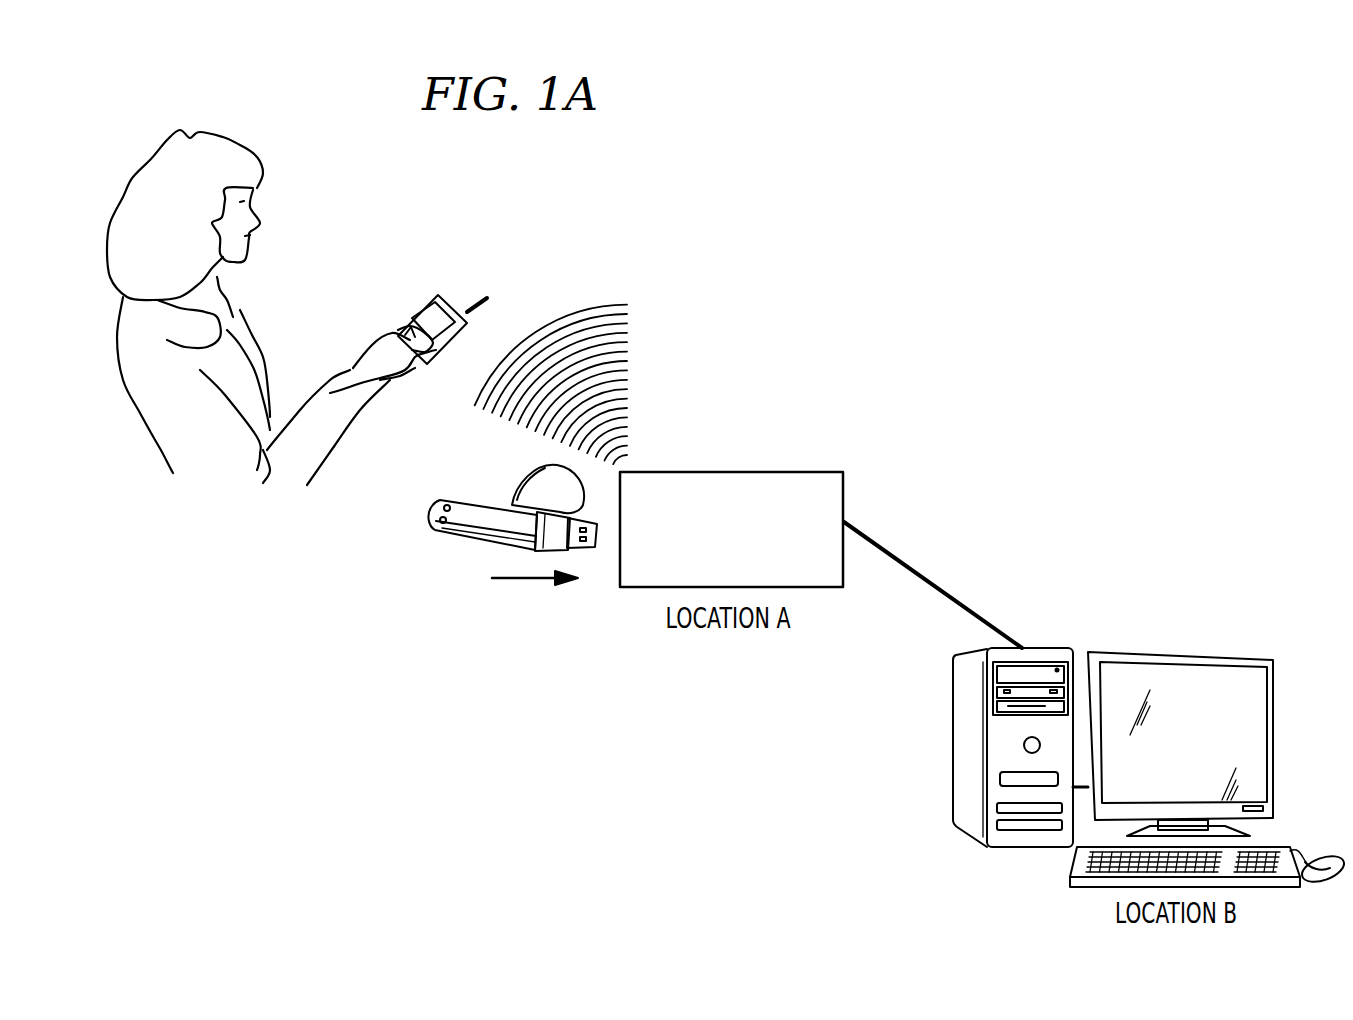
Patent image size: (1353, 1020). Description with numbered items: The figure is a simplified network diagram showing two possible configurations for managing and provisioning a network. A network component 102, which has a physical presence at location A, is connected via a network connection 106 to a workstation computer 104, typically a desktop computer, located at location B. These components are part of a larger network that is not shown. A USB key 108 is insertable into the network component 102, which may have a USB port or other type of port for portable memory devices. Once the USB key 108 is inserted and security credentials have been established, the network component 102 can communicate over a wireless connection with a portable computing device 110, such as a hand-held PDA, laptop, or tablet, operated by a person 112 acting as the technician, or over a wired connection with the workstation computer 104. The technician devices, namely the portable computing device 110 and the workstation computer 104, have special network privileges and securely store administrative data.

The network component 102 is at (763, 472).
The workstation computer 104 is at (1178, 652).
The network connection 106 is at (935, 583).
The USB key 108 is at (475, 508).
The portable computing device 110 is at (430, 295).
The person 112 is at (190, 138).